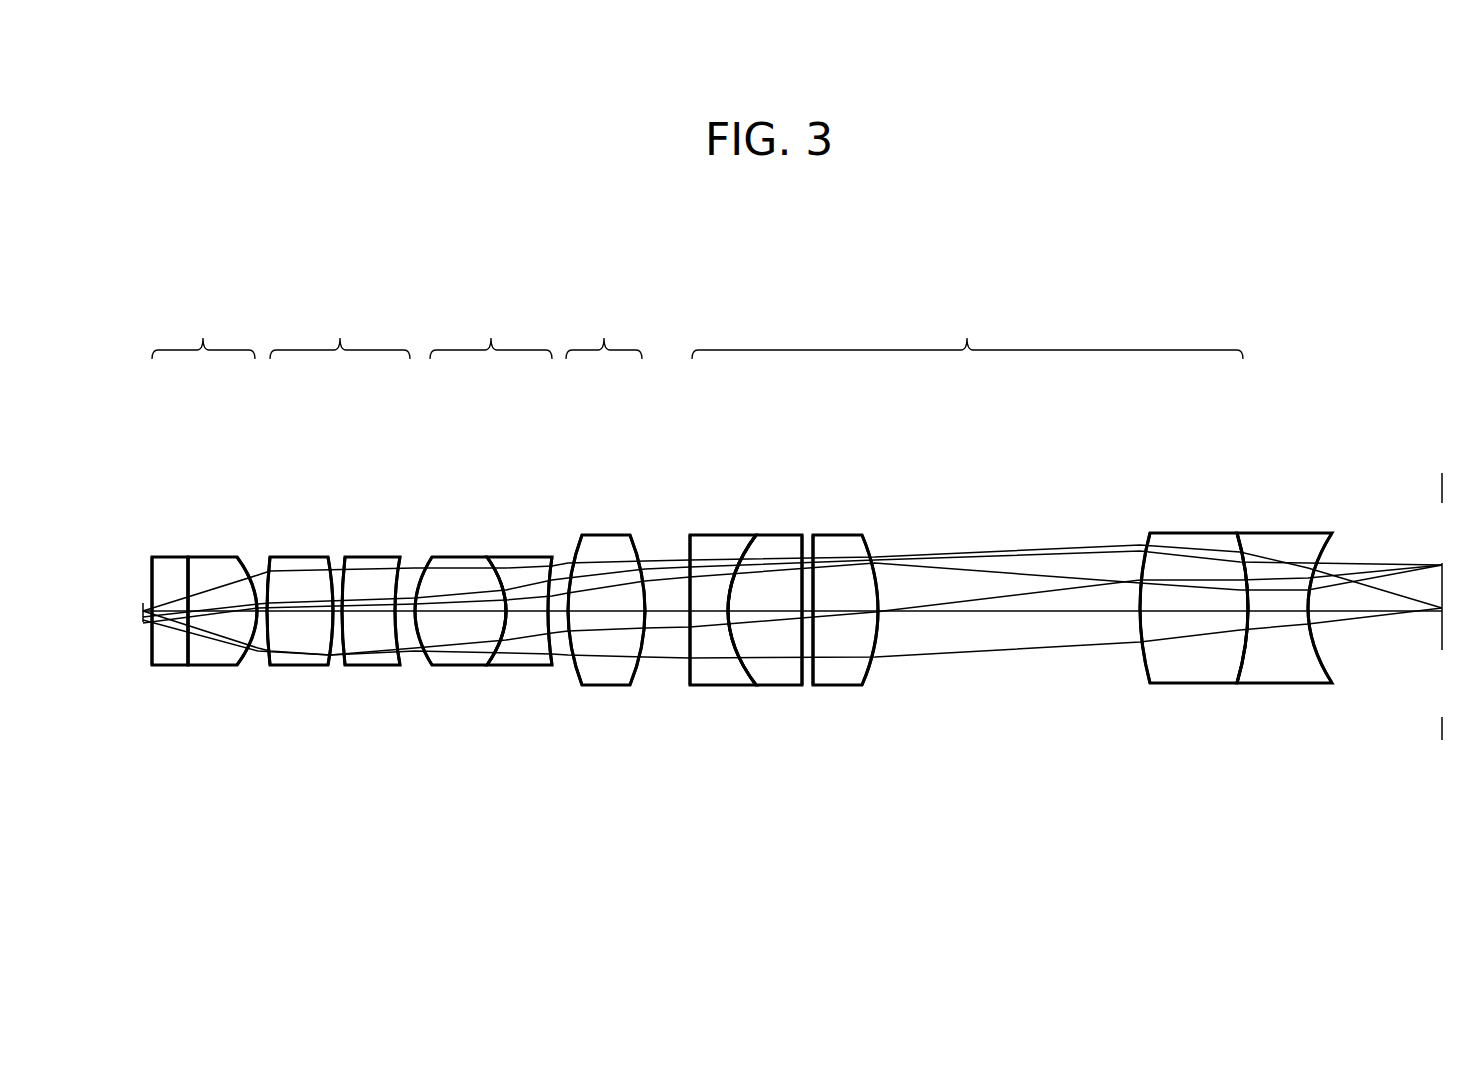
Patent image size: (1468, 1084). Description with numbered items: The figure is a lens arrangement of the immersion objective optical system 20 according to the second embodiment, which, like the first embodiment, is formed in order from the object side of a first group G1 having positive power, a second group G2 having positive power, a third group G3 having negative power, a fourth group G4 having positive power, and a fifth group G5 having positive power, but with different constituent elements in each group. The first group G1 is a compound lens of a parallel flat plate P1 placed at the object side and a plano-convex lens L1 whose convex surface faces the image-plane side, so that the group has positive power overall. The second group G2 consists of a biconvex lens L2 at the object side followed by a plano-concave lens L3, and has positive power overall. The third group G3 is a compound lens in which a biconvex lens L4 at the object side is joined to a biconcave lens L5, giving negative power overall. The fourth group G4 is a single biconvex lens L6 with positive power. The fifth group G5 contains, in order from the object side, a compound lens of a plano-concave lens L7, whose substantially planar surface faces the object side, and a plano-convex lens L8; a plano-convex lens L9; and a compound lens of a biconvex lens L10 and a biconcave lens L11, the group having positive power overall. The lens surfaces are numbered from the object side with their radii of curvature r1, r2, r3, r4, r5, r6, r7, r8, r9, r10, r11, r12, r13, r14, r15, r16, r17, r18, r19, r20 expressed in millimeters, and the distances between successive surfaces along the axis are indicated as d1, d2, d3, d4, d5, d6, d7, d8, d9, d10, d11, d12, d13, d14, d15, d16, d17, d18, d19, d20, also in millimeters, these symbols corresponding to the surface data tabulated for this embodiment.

The immersion objective optical system 20 is at (1313, 243).
The first group G1 is at (203, 328).
The second group G2 is at (340, 328).
The third group G3 is at (491, 328).
The fourth group G4 is at (604, 328).
The fifth group G5 is at (967, 328).
The parallel flat plate P1 is at (173, 557).
The plano-convex lens L1 is at (225, 557).
The biconvex lens L2 is at (283, 557).
The plano-concave lens L3 is at (373, 557).
The biconvex lens L4 is at (462, 557).
The biconcave lens L5 is at (515, 557).
The biconvex lens L6 is at (592, 535).
The plano-concave lens L7 is at (722, 535).
The plano-convex lens L8 is at (770, 535).
The plano-convex lens L9 is at (830, 535).
The biconvex lens L10 is at (1183, 533).
The biconcave lens L11 is at (1322, 533).
The distance between surfaces d1 is at (168, 560).
The distance between surfaces d2 is at (215, 560).
The distance between surfaces d3 is at (263, 565).
The distance between surfaces d4 is at (300, 560).
The distance between surfaces d5 is at (337, 560).
The distance between surfaces d6 is at (370, 560).
The distance between surfaces d7 is at (407, 560).
The distance between surfaces d8 is at (458, 560).
The distance between surfaces d9 is at (525, 665).
The distance between surfaces d10 is at (558, 560).
The distance between surfaces d11 is at (613, 640).
The distance between surfaces d12 is at (660, 560).
The distance between surfaces d13 is at (713, 560).
The distance between surfaces d14 is at (775, 550).
The distance between surfaces d15 is at (808, 560).
The distance between surfaces d16 is at (855, 555).
The distance between surfaces d17 is at (1022, 615).
The distance between surfaces d18 is at (1198, 615).
The distance between surfaces d19 is at (1277, 608).
The distance between surfaces d20 is at (1365, 608).
The radius of curvature r1 is at (152, 665).
The radius of curvature r2 is at (188, 665).
The radius of curvature r3 is at (237, 665).
The radius of curvature r4 is at (270, 665).
The radius of curvature r5 is at (330, 665).
The radius of curvature r6 is at (345, 665).
The radius of curvature r7 is at (400, 665).
The radius of curvature r8 is at (432, 557).
The radius of curvature r9 is at (488, 665).
The radius of curvature r10 is at (552, 665).
The radius of curvature r11 is at (580, 685).
The radius of curvature r12 is at (632, 685).
The radius of curvature r13 is at (692, 685).
The radius of curvature r14 is at (760, 685).
The radius of curvature r15 is at (804, 685).
The radius of curvature r16 is at (817, 685).
The radius of curvature r17 is at (878, 642).
The radius of curvature r18 is at (1150, 533).
The radius of curvature r19 is at (1237, 683).
The radius of curvature r20 is at (1332, 683).